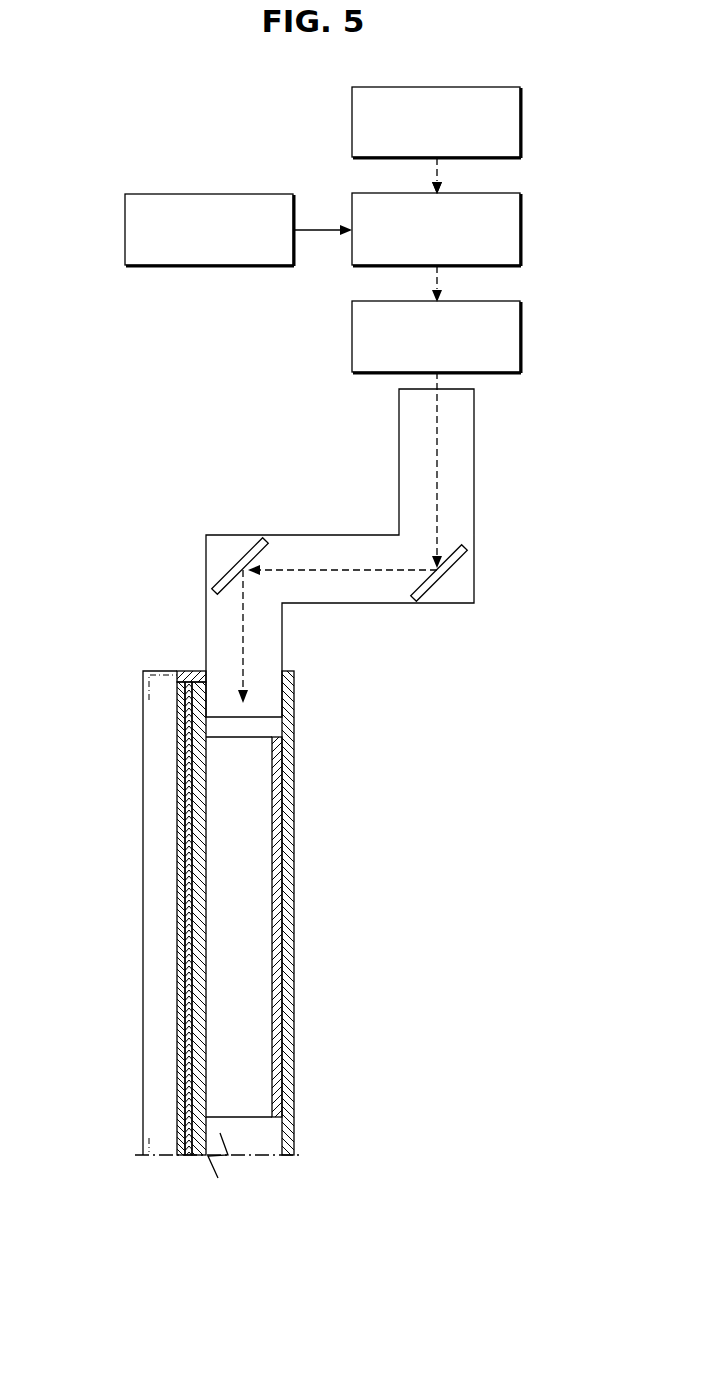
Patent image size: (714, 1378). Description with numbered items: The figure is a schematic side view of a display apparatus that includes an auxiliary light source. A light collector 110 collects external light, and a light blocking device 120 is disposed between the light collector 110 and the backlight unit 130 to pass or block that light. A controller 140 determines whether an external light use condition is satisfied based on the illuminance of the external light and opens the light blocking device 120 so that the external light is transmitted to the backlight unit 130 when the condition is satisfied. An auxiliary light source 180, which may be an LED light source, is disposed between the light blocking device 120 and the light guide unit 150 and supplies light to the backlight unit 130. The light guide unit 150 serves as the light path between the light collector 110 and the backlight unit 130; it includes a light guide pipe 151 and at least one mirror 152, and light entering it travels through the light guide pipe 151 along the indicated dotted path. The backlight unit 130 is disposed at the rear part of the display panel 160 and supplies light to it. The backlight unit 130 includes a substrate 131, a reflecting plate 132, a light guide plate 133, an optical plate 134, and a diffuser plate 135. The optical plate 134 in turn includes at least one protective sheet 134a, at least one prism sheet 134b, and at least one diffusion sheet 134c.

The light collector 110 is at (521, 119).
The light blocking device 120 is at (521, 228).
The auxiliary light source 180 is at (521, 336).
The controller 140 is at (124, 229).
The light guide unit 150 is at (351, 544).
The light guide pipe 151 is at (467, 475).
The mirror 152 is at (435, 577).
The display panel 160 is at (143, 823).
The backlight unit 130 is at (221, 993).
The substrate 131 is at (288, 795).
The reflecting plate 132 is at (275, 857).
The light guide plate 133 is at (253, 943).
The optical plate 134 is at (142, 970).
The protective sheet 134a is at (183, 1157).
The prism sheet 134b is at (188, 1157).
The diffusion sheet 134c is at (202, 952).
The diffuser plate 135 is at (218, 1158).